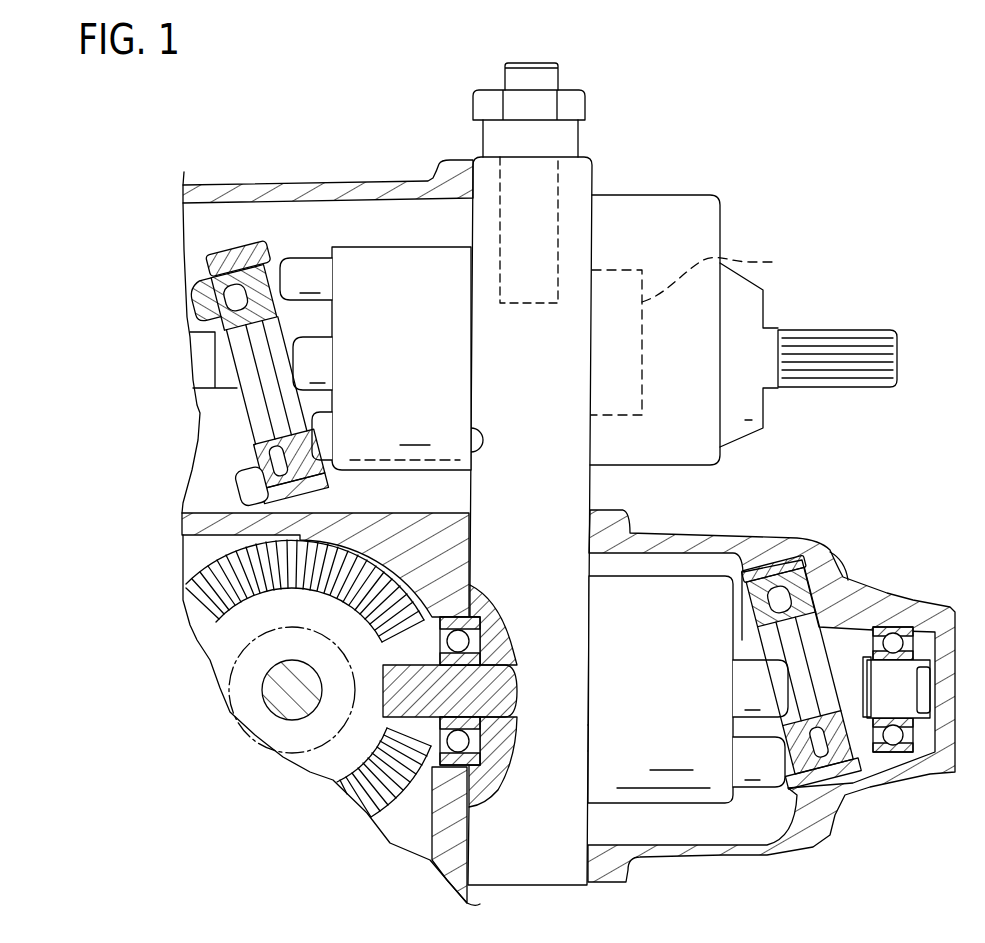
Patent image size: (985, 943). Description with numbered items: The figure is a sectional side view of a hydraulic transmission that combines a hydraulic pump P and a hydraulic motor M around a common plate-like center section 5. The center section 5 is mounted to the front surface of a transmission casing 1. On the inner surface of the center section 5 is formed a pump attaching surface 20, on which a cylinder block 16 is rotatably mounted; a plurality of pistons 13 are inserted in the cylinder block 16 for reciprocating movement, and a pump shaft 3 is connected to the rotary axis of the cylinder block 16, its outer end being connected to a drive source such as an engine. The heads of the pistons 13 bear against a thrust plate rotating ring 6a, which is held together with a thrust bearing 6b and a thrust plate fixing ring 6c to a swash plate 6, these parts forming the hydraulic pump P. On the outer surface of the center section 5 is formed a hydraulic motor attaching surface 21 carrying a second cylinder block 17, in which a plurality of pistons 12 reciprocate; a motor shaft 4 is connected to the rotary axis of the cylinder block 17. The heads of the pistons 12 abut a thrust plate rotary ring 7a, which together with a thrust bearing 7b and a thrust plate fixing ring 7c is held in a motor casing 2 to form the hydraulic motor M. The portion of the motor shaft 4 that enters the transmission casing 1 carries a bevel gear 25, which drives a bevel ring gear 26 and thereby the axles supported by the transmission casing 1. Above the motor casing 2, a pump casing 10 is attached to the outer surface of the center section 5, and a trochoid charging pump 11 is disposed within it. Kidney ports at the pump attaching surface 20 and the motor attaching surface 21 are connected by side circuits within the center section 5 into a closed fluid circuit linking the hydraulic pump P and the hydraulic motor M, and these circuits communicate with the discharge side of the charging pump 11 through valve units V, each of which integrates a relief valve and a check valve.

The transmission casing 1 is at (302, 185).
The motor casing 2 is at (840, 800).
The pump shaft 3 is at (850, 330).
The motor shaft 4 is at (500, 683).
The center section 5 is at (578, 500).
The swash plate 6 is at (236, 262).
The thrust plate rotating ring 6a is at (262, 253).
The thrust bearing 6b is at (207, 267).
The thrust plate fixing ring 6c is at (213, 308).
The thrust plate rotary ring 7a is at (753, 563).
The thrust bearing 7b is at (767, 560).
The thrust plate fixing ring 7c is at (833, 545).
The pump casing 10 is at (720, 215).
The trochoid charging pump 11 is at (694, 325).
The pistons 12 is at (770, 787).
The pistons 13 is at (312, 258).
The cylinder block 16 is at (400, 247).
The cylinder block 17 is at (678, 585).
The pump attaching surface 20 is at (483, 438).
The hydraulic motor attaching surface 21 is at (589, 752).
The bevel gear 25 is at (413, 817).
The bevel ring gear 26 is at (200, 633).
The hydraulic pump P is at (428, 210).
The hydraulic motor M is at (872, 566).
The valve unit V is at (611, 134).